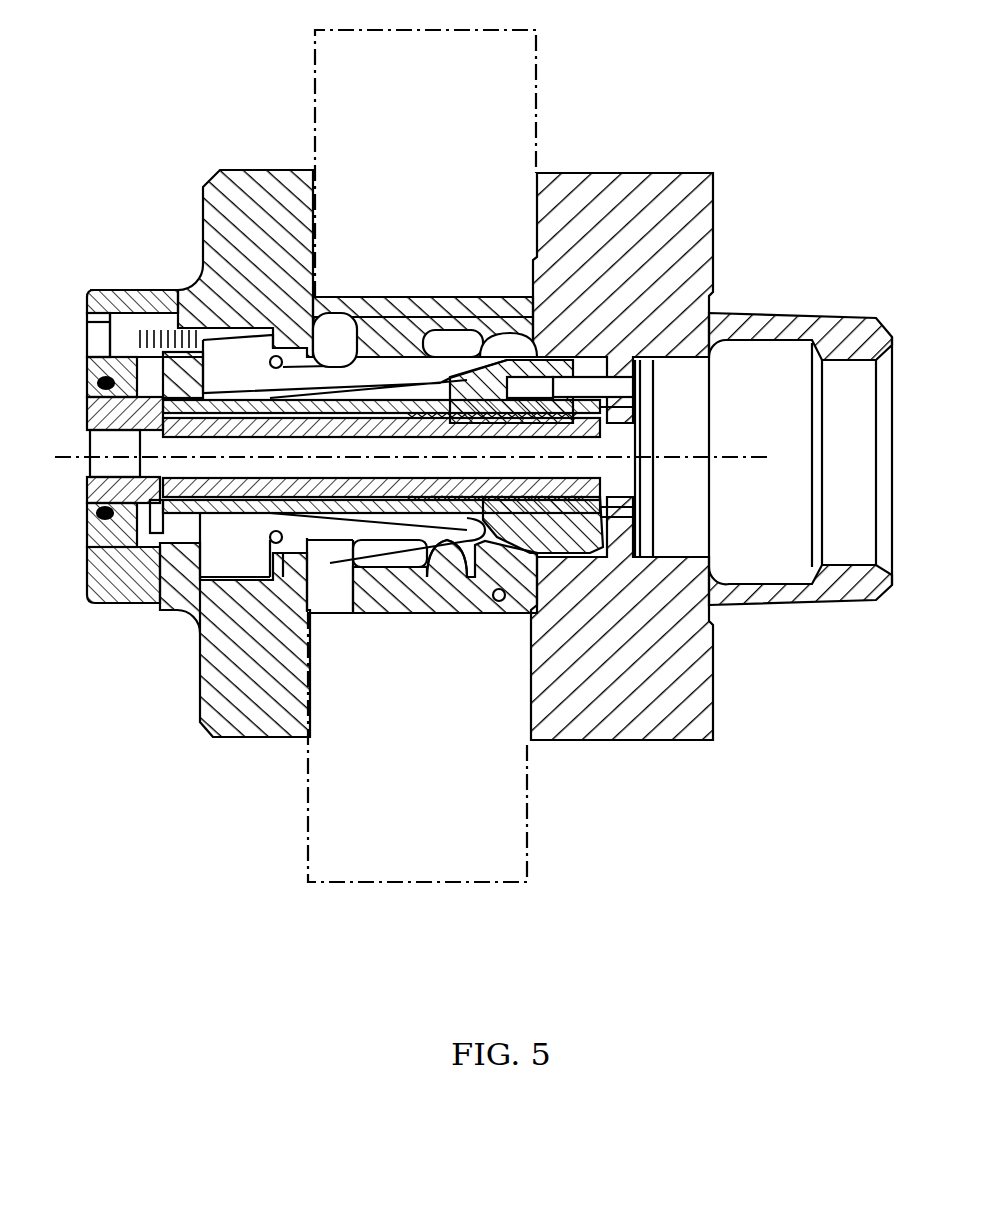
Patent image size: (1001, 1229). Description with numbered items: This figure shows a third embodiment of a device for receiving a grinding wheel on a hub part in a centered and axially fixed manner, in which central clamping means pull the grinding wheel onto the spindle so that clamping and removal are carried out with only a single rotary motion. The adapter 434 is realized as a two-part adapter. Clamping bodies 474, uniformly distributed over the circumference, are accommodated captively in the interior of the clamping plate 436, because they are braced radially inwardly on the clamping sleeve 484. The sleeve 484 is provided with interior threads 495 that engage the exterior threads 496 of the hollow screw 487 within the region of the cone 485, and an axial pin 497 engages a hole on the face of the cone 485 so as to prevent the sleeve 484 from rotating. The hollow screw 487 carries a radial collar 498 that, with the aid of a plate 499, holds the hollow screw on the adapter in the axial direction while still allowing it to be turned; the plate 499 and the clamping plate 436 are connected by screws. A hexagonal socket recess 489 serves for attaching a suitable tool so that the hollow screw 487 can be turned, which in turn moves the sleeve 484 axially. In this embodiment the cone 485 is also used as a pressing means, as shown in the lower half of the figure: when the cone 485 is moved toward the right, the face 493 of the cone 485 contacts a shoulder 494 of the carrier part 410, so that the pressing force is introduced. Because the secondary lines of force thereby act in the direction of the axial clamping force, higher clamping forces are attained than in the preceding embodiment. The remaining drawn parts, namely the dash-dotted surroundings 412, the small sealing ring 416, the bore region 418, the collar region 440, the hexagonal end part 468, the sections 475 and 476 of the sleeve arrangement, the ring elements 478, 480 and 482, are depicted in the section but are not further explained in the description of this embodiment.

The carrier part 410 is at (664, 202).
The housing wall 412 is at (523, 73).
The O-ring seal 416 is at (503, 605).
The bore 418 is at (370, 582).
The adapter 434 is at (182, 748).
The clamping plate 436 is at (257, 200).
The collar 440 is at (402, 307).
The hex plug 468 is at (850, 333).
The clamping bodies 474 is at (327, 367).
The sleeve 475 is at (222, 360).
The sleeve 476 is at (177, 523).
The sealing lip 478 is at (472, 352).
The retaining ring 480 is at (450, 333).
The spring ring 482 is at (413, 545).
The clamping sleeve 484 is at (382, 367).
The cone 485 is at (573, 533).
The hollow screw 487 is at (100, 417).
The hexagonal socket recess 489 is at (118, 465).
The face of the cone 493 is at (650, 537).
The shoulder of the carrier part 494 is at (623, 518).
The interior threads 495 is at (600, 470).
The exterior threads 496 is at (600, 417).
The axial pin 497 is at (623, 387).
The radial collar 498 is at (143, 527).
The plate 499 is at (87, 370).